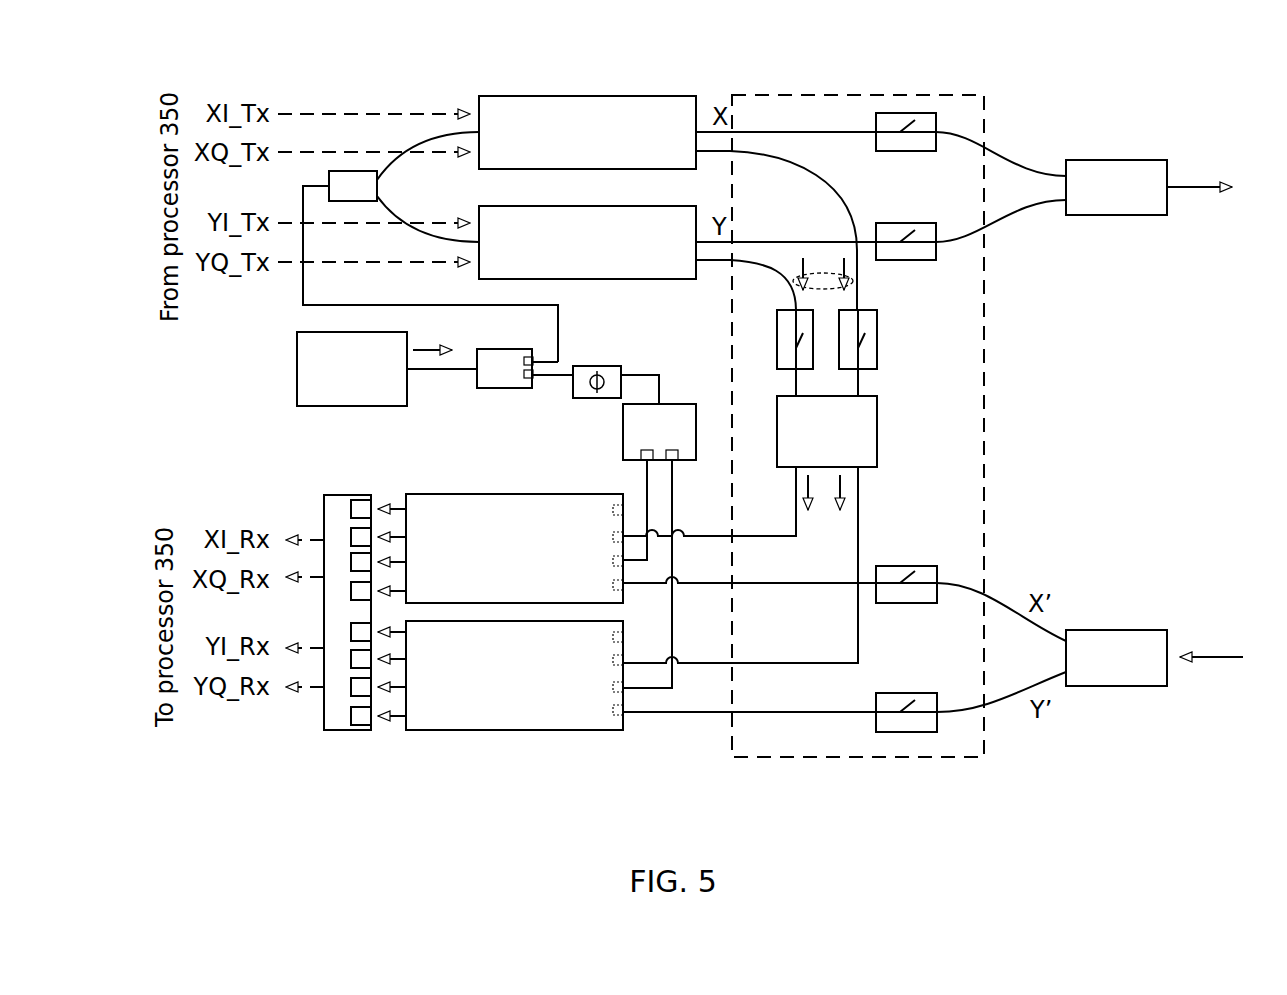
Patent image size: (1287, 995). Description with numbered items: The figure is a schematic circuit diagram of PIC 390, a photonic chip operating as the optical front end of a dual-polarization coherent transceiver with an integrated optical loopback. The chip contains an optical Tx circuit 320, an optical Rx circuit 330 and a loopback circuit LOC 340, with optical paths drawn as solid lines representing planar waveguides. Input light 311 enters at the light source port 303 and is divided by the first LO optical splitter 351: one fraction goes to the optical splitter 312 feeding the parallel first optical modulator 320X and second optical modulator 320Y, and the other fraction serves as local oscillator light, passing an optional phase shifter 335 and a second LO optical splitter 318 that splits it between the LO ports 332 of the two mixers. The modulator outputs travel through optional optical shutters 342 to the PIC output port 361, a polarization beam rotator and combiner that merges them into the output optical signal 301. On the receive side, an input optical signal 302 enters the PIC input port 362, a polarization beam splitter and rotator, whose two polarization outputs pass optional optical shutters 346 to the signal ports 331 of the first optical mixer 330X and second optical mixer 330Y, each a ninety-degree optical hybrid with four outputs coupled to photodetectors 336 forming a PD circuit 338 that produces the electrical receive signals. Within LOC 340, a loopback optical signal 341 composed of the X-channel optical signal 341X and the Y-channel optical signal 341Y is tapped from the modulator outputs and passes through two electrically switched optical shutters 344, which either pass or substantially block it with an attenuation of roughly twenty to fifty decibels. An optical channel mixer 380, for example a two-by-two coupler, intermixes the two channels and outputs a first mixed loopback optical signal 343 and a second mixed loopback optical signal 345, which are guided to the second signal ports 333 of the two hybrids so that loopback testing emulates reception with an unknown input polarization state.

The PIC 390 is at (627, 34).
The optical Tx circuit 320 is at (440, 62).
The optical splitter 312 is at (352, 171).
The first optical modulator 320X is at (497, 96).
The second optical modulator 320Y is at (635, 279).
The optical shutters 342 is at (900, 113).
The LOC 340 is at (985, 395).
The loopback optical signal 341 is at (838, 252).
The X-channel optical signal 341X is at (891, 283).
The Y-channel optical signal 341Y is at (770, 283).
The optical shutters 344 is at (777, 352).
The optical channel mixer 380 is at (877, 425).
The second mixed loopback optical signal 345 is at (796, 490).
The first mixed loopback optical signal 343 is at (858, 490).
The PIC output port 361 is at (1137, 215).
The output optical signal 301 is at (1203, 192).
The PIC input port 362 is at (1105, 630).
The input optical signal 302 is at (1200, 657).
The optical shutters 346 is at (937, 566).
The light source port 303 is at (297, 377).
The input light 311 is at (432, 355).
The optical splitter 351 is at (515, 388).
The phase shifter 335 is at (603, 398).
The second LO optical splitter 318 is at (688, 460).
The optical Rx circuit 330 is at (486, 649).
The second optical mixer 330Y is at (480, 494).
The first optical mixer 330X is at (512, 730).
The second signal port 333 is at (615, 537).
The signal port 331 is at (615, 598).
The LO port 332 is at (625, 578).
The PD circuit 338 is at (324, 610).
The photodetector 336 is at (360, 730).